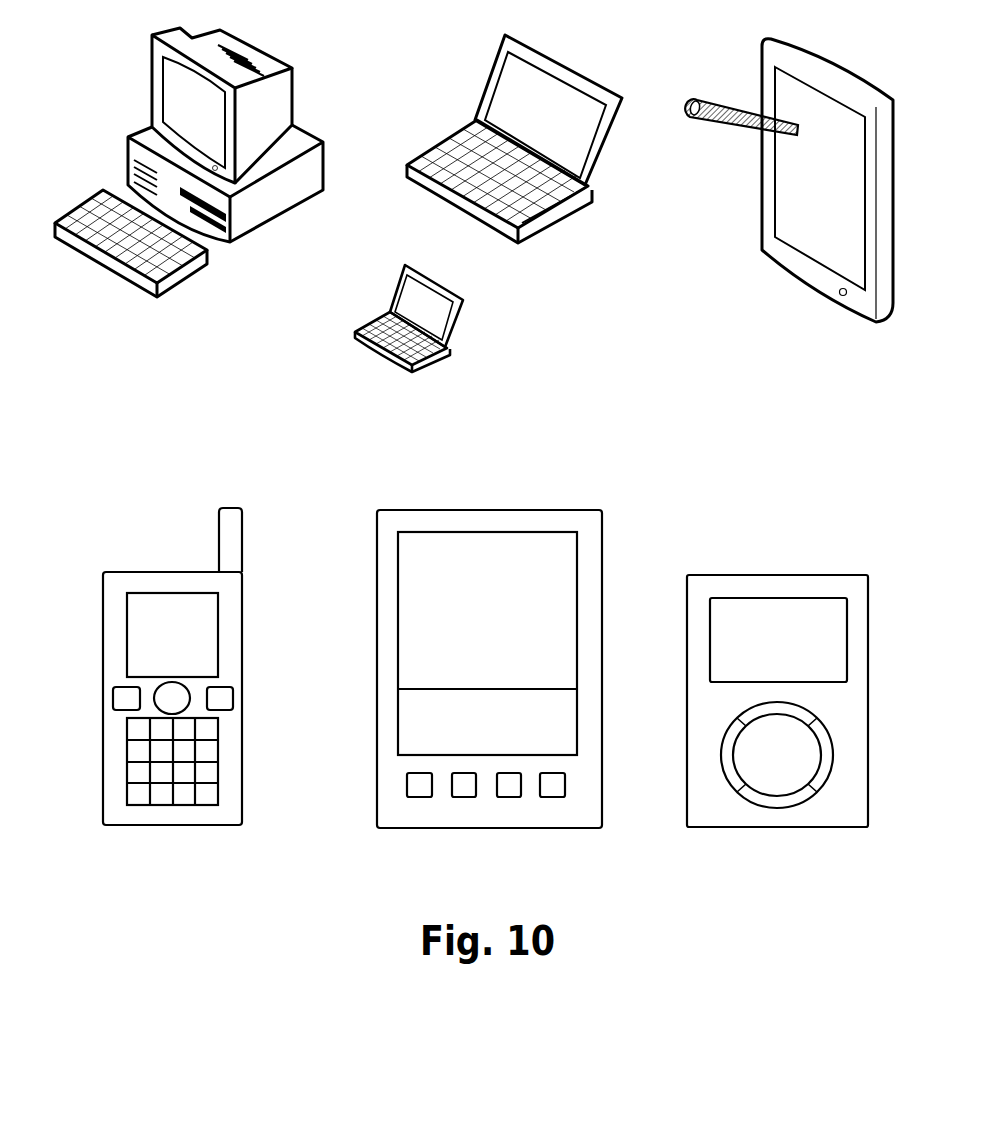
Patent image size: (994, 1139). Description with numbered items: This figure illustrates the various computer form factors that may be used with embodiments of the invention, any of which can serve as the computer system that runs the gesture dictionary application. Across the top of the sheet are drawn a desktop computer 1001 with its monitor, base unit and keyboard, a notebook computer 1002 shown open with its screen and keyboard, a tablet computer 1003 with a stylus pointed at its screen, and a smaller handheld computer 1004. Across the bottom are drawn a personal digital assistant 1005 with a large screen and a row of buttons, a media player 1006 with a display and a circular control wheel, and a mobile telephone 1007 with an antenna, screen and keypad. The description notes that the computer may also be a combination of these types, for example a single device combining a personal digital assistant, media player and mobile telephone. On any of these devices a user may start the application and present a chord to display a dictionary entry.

The desktop computer 1001 is at (290, 205).
The notebook computer 1002 is at (563, 220).
The tablet computer 1003 is at (760, 253).
The handheld computer 1004 is at (432, 363).
The personal digital assistant 1005 is at (445, 828).
The media player 1006 is at (710, 827).
The mobile telephone 1007 is at (132, 825).